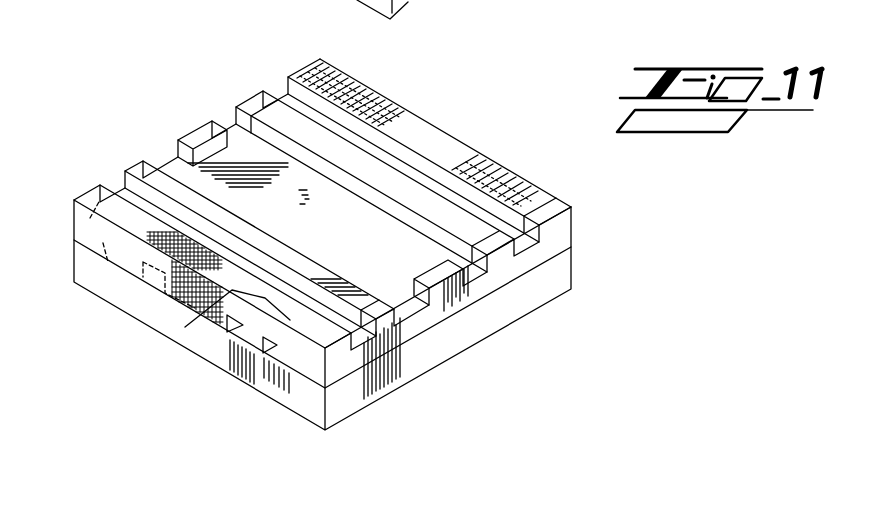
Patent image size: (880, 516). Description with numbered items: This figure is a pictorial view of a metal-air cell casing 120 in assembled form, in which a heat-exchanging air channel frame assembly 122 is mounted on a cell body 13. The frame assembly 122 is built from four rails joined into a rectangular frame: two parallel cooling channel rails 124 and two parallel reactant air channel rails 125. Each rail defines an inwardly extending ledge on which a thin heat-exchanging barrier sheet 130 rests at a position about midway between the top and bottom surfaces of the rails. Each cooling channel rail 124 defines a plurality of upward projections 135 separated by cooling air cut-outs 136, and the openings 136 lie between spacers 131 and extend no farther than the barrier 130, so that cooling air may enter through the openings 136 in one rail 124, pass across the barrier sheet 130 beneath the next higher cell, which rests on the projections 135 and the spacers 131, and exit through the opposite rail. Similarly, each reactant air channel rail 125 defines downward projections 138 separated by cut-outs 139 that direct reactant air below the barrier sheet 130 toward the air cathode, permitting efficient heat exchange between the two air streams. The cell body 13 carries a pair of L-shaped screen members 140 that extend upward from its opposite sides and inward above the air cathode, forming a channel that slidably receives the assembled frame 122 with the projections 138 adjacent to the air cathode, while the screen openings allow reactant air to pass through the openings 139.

The metal-air cell casing 120 is at (537, 383).
The cell body 13 is at (408, 372).
The heat-exchanging air channel frame assembly 122 is at (574, 221).
The cooling channel rail 124 is at (558, 228).
The L-shaped screen member 140 is at (122, 210).
The spacer 131 is at (157, 178).
The heat-exchanging barrier sheet 130 is at (356, 222).
The upward projection 135 is at (258, 93).
The cooling air cut-out 136 is at (225, 117).
The downward projection 138 is at (218, 320).
The reactant air opening 139 is at (264, 312).
The reactant air channel rail 125 is at (250, 348).